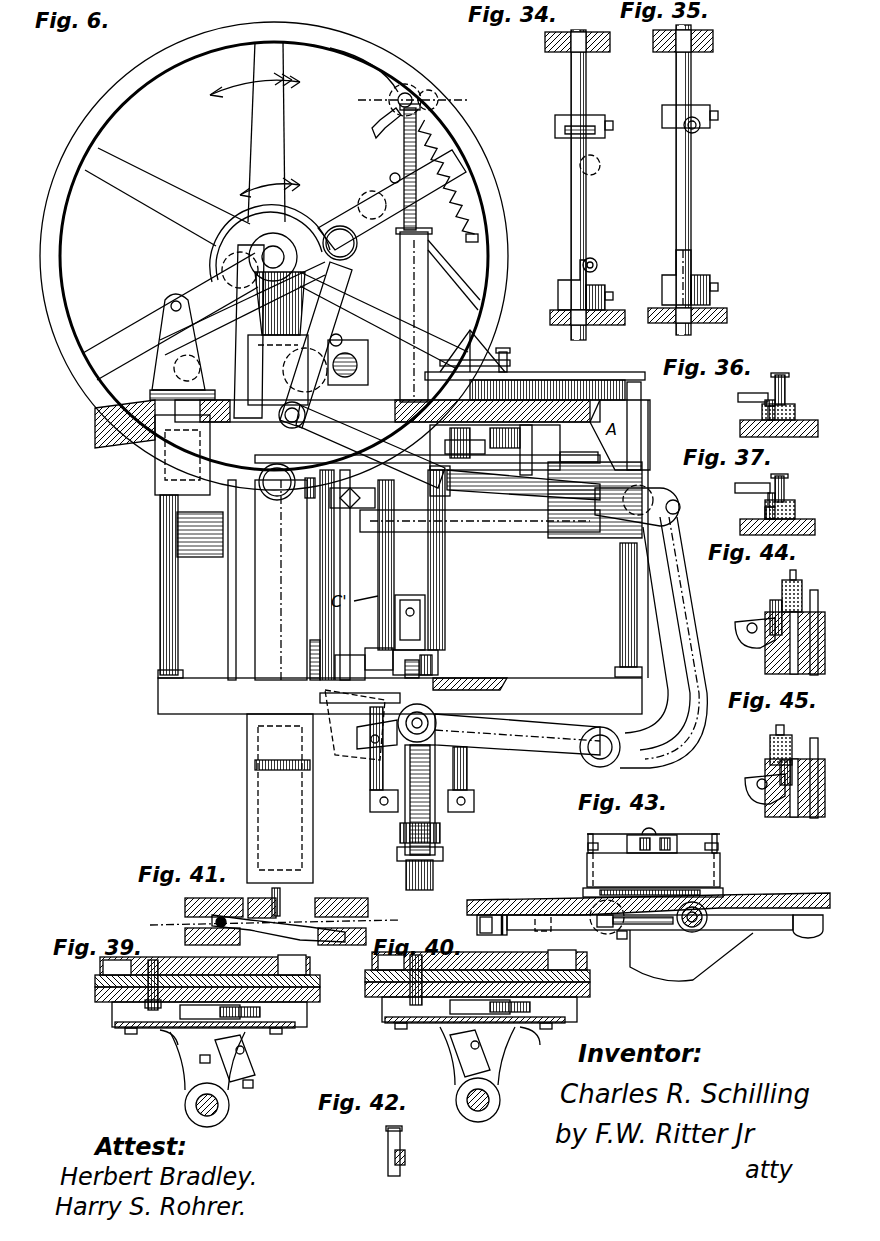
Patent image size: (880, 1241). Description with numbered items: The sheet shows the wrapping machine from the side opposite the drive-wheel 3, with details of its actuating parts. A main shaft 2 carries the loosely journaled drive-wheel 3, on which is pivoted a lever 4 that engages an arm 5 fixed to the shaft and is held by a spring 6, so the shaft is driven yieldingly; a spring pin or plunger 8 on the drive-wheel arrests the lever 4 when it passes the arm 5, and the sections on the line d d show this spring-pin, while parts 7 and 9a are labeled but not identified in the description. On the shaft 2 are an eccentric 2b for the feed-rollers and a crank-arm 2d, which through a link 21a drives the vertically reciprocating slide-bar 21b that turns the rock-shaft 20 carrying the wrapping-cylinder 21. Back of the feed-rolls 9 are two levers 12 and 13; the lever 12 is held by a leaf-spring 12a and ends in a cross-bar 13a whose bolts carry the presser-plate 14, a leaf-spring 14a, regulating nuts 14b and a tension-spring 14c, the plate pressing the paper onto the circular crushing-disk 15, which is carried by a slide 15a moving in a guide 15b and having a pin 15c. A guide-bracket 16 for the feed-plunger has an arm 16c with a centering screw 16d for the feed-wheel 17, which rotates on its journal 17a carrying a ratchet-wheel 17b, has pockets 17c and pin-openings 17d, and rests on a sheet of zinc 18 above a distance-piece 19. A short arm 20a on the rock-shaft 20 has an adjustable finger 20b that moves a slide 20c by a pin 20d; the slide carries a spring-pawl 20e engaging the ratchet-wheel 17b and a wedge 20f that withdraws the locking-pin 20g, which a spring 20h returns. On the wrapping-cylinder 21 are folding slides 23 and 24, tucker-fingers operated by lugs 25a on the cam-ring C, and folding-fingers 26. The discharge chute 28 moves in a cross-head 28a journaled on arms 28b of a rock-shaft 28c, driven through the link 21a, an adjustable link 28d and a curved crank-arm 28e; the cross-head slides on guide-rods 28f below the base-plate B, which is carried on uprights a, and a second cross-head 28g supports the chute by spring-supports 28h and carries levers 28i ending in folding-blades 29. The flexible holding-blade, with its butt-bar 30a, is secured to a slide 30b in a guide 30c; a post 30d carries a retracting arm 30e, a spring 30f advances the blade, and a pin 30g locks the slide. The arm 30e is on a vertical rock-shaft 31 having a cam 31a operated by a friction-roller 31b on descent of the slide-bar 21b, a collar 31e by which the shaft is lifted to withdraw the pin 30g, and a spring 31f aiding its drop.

In FIG. 6, the main shaft 2 is at (277, 284).
In FIG. 6, the eccentric 2b is at (228, 226).
In FIG. 6, the crank-arm 2d is at (350, 208).
In FIG. 6, the drive-wheel 3 is at (58, 304).
In FIG. 44, the drive-wheel 3 is at (790, 675).
In FIG. 45, the drive-wheel 3 is at (806, 820).
In FIG. 6, the lever 4 is at (355, 243).
In FIG. 44, the lever 4 is at (782, 595).
In FIG. 45, the lever 4 is at (770, 752).
In FIG. 6, the arm 5 is at (425, 167).
In FIG. 6, the spring 6 is at (452, 186).
In FIG. 44, the pin 7 is at (818, 606).
In FIG. 45, the pin 7 is at (818, 755).
In FIG. 44, the spring pin or plunger 8 is at (772, 613).
In FIG. 45, the spring pin or plunger 8 is at (768, 752).
In FIG. 6, the feed-rolls 9 is at (352, 365).
In FIG. 6, the cam housing 9a is at (325, 372).
In FIG. 6, the lever 12 is at (225, 360).
In FIG. 6, the leaf-spring 12a is at (178, 296).
In FIG. 6, the lever 13 is at (418, 262).
In FIG. 6, the cross-bar 13a is at (455, 350).
In FIG. 43, the cross-bar 13a is at (653, 869).
In FIG. 43, the presser-plate 14 is at (723, 890).
In FIG. 43, the leaf-spring 14a is at (640, 885).
In FIG. 43, the nuts 14b is at (588, 847).
In FIG. 43, the supplemental tension-spring 14c is at (660, 835).
In FIG. 43, the circular rotary crushing-disk 15 is at (688, 933).
In FIG. 43, the reciprocating slide or bar 15a is at (650, 925).
In FIG. 6, the guide 15b is at (154, 452).
In FIG. 43, the guide 15b is at (577, 918).
In FIG. 43, the pin 15c is at (618, 935).
In FIG. 6, the guide-bracket 16 is at (448, 302).
In FIG. 6, the arm 16c is at (480, 368).
In FIG. 6, the centering pin or screw 16d is at (512, 362).
In FIG. 6, the feed-wheel 17 is at (535, 369).
In FIG. 43, the feed-wheel 17 is at (500, 932).
In FIG. 39, the feed-wheel 17 is at (250, 958).
In FIG. 40, the feed-wheel 17 is at (479, 954).
In FIG. 6, the center pin or journal 17a is at (600, 470).
In FIG. 6, the ratchet-wheel 17b is at (471, 454).
In FIG. 43, the pockets 17c is at (560, 930).
In FIG. 39, the pockets 17c is at (306, 965).
In FIG. 40, the pockets 17c is at (470, 960).
In FIG. 39, the pin-opening 17d is at (103, 965).
In FIG. 6, the sheet of zinc 18 is at (622, 391).
In FIG. 39, the sheet of zinc 18 is at (95, 986).
In FIG. 6, the distance-piece 19 is at (641, 396).
In FIG. 39, the distance-piece 19 is at (320, 990).
In FIG. 40, the distance-piece 19 is at (590, 989).
In FIG. 6, the rock-shaft 20 is at (583, 610).
In FIG. 39, the rock-shaft 20 is at (225, 1108).
In FIG. 40, the rock-shaft 20 is at (498, 1105).
In FIG. 39, the short arm 20a is at (258, 1051).
In FIG. 39, the adjustable finger 20b is at (207, 1057).
In FIG. 40, the adjustable finger 20b is at (440, 1048).
In FIG. 6, the slide 20c is at (585, 422).
In FIG. 39, the slide 20c is at (308, 1011).
In FIG. 40, the slide 20c is at (578, 1011).
In FIG. 41, the slide 20c is at (370, 918).
In FIG. 6, the pin 20d is at (600, 470).
In FIG. 41, the pin 20d is at (280, 905).
In FIG. 41, the spring-pawl 20e is at (250, 912).
In FIG. 39, the wedge 20f is at (172, 1040).
In FIG. 42, the wedge 20f is at (402, 1156).
In FIG. 39, the locking-pin 20g is at (150, 1030).
In FIG. 40, the locking-pin 20g is at (418, 1032).
In FIG. 42, the locking-pin 20g is at (398, 1133).
In FIG. 39, the spring 20h is at (180, 1060).
In FIG. 40, the spring 20h is at (500, 1035).
In FIG. 6, the wrapping-cylinder 21 is at (445, 560).
In FIG. 6, the lever or link 21a is at (344, 294).
In FIG. 6, the vertically-reciprocating slide-bar 21b is at (281, 580).
In FIG. 6, the slide 23 is at (430, 615).
In FIG. 6, the slide 24 is at (362, 443).
In FIG. 6, the lugs 25a is at (372, 562).
In FIG. 6, the fingers 26 is at (440, 632).
In FIG. 6, the reciprocating receiving and discharge chute 28 is at (433, 876).
In FIG. 6, the cross-head 28a is at (372, 738).
In FIG. 6, the arms 28b is at (499, 729).
In FIG. 6, the rock-shaft 28c is at (592, 760).
In FIG. 6, the adjustable link or lever 28d is at (463, 466).
In FIG. 6, the curved crank-arm 28e is at (690, 742).
In FIG. 6, the guide-rods 28f is at (444, 856).
In FIG. 6, the second cross-head 28g is at (378, 816).
In FIG. 6, the spring-supports 28h is at (400, 846).
In FIG. 6, the levers 28i is at (470, 786).
In FIG. 6, the folding-blades 29 is at (330, 688).
In FIG. 36, the butt-bar 30a is at (790, 392).
In FIG. 37, the butt-bar 30a is at (735, 488).
In FIG. 6, the slide 30b is at (450, 666).
In FIG. 36, the slide 30b is at (790, 414).
In FIG. 37, the slide 30b is at (795, 515).
In FIG. 36, the guide 30c is at (768, 414).
In FIG. 37, the guide 30c is at (745, 526).
In FIG. 36, the pin or post 30d is at (782, 375).
In FIG. 37, the pin or post 30d is at (786, 477).
In FIG. 6, the arm 30e is at (385, 674).
In FIG. 36, the arm 30e is at (738, 397).
In FIG. 6, the spring 30f is at (465, 660).
In FIG. 36, the pin 30g is at (765, 404).
In FIG. 37, the pin 30g is at (768, 509).
In FIG. 6, the vertical rock-shaft 31 is at (330, 606).
In FIG. 34, the vertical rock-shaft 31 is at (590, 225).
In FIG. 35, the vertical rock-shaft 31 is at (676, 218).
In FIG. 6, the cam 31a is at (310, 645).
In FIG. 34, the cam 31a is at (575, 264).
In FIG. 35, the cam 31a is at (698, 256).
In FIG. 6, the friction-roller 31b is at (316, 540).
In FIG. 34, the friction-roller 31b is at (598, 266).
In FIG. 35, the friction-roller 31b is at (700, 132).
In FIG. 34, the collar 31e is at (606, 129).
In FIG. 34, the spring 31f is at (584, 31).
In FIG. 35, the spring 31f is at (695, 25).
In FIG. 6, the uprights a is at (178, 622).
In FIG. 6, the base-plate B is at (400, 776).
In FIG. 36, the base-plate B is at (800, 438).
In FIG. 37, the base-plate B is at (810, 535).
In FIG. 39, the base-plate B is at (95, 1000).
In FIG. 40, the base-plate B is at (461, 1024).
In FIG. 6, the cam-ring C is at (450, 591).
In FIG. 6, the section line d d is at (414, 111).